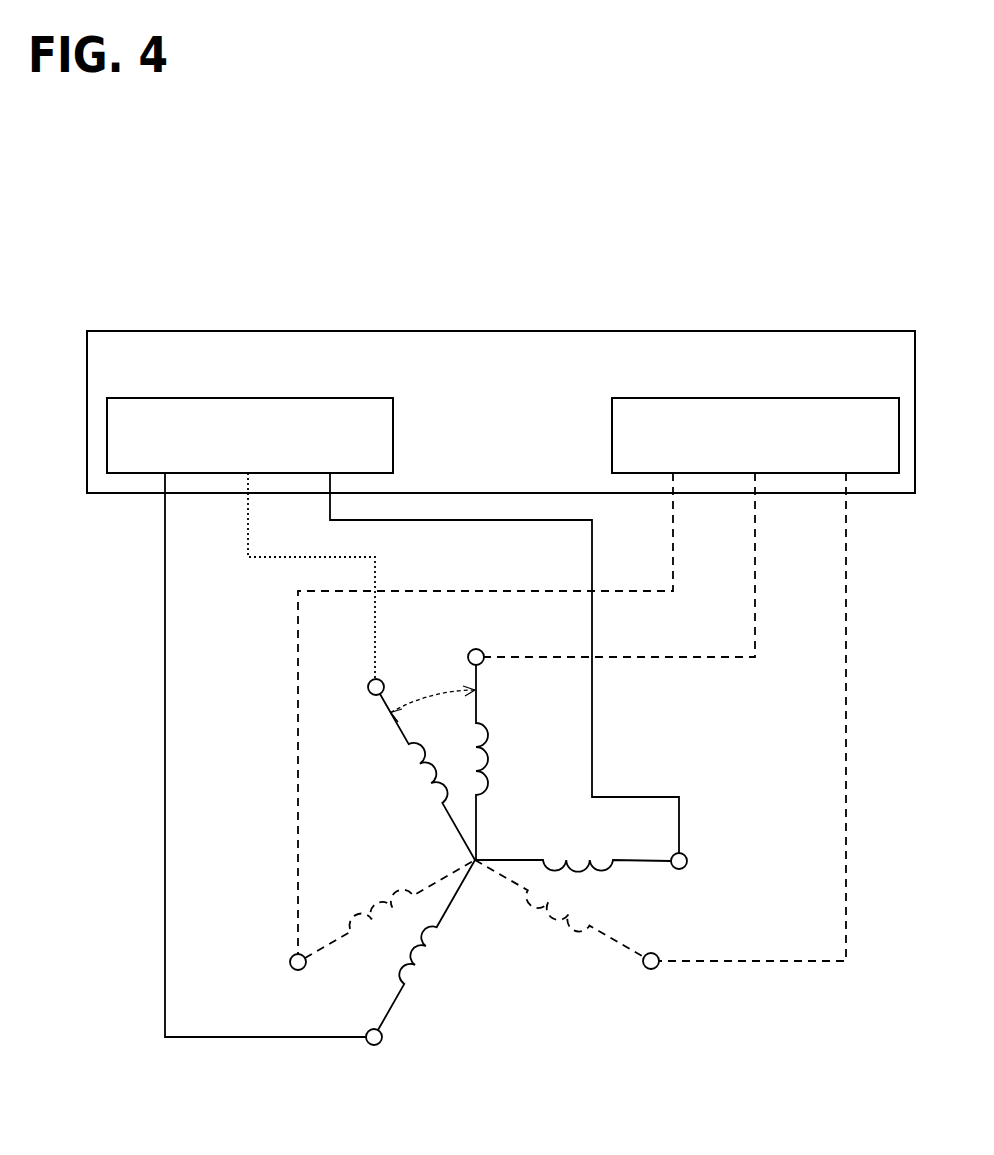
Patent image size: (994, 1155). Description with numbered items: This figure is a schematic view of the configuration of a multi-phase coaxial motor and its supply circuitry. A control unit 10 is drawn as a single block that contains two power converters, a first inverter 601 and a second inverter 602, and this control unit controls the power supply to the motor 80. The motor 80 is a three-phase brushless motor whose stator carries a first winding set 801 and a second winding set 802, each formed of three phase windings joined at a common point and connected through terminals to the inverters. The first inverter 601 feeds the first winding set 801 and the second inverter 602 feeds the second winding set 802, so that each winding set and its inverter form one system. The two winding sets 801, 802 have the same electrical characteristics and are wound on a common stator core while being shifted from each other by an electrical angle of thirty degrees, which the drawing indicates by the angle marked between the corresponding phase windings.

The control unit 10 is at (498, 331).
The first inverter 601 is at (250, 398).
The second inverter 602 is at (757, 398).
The motor 80 is at (476, 849).
The first winding set 801 is at (430, 768).
The second winding set 802 is at (497, 760).